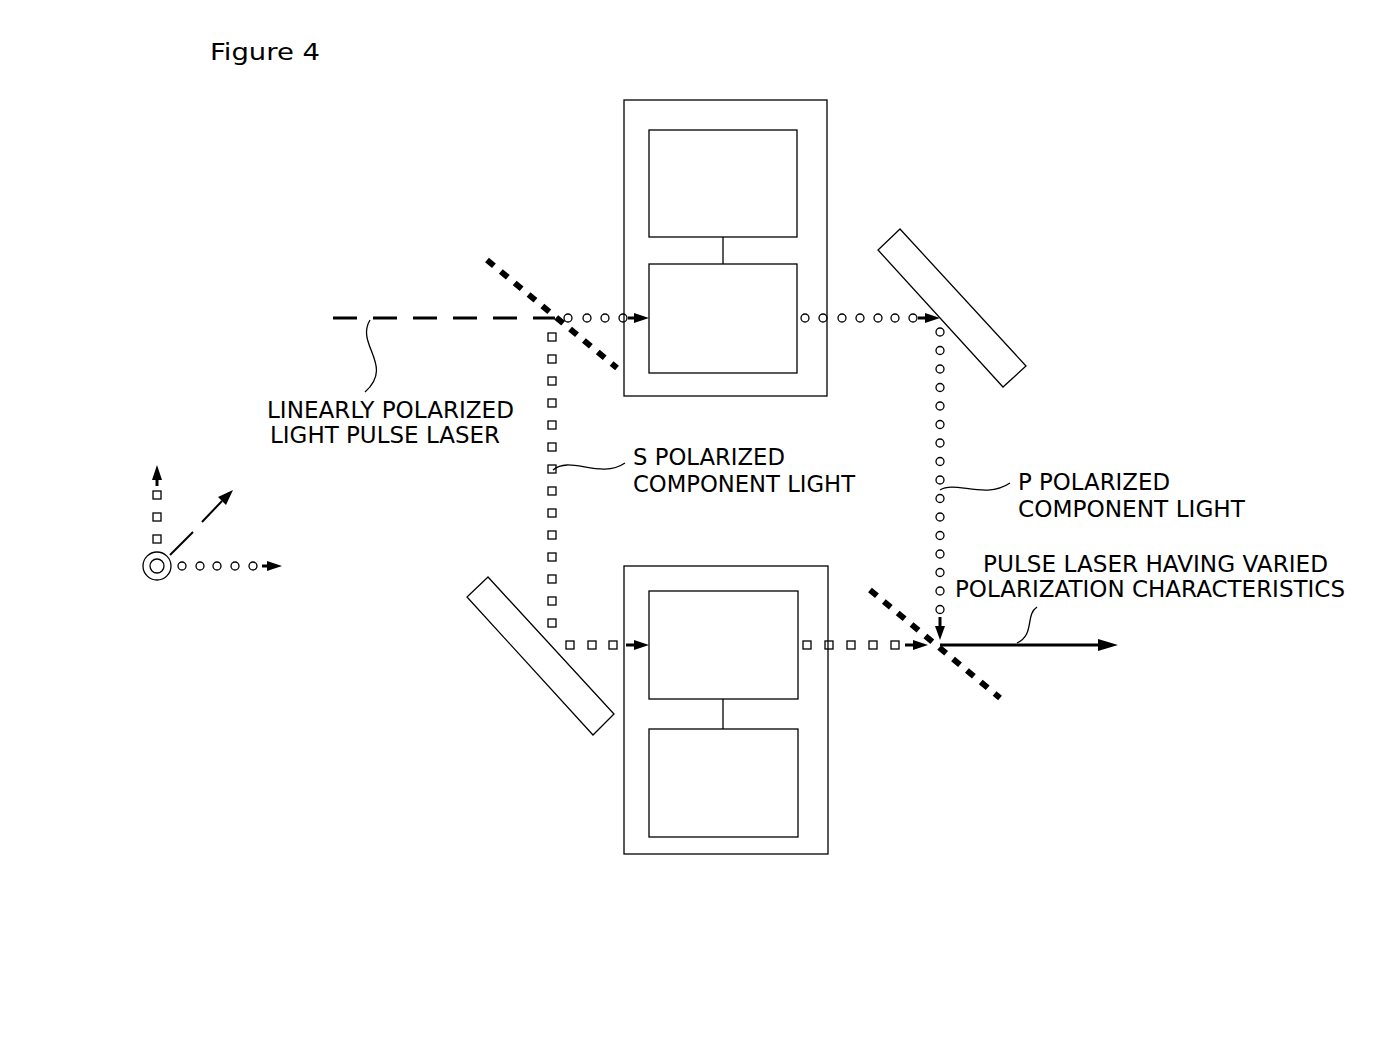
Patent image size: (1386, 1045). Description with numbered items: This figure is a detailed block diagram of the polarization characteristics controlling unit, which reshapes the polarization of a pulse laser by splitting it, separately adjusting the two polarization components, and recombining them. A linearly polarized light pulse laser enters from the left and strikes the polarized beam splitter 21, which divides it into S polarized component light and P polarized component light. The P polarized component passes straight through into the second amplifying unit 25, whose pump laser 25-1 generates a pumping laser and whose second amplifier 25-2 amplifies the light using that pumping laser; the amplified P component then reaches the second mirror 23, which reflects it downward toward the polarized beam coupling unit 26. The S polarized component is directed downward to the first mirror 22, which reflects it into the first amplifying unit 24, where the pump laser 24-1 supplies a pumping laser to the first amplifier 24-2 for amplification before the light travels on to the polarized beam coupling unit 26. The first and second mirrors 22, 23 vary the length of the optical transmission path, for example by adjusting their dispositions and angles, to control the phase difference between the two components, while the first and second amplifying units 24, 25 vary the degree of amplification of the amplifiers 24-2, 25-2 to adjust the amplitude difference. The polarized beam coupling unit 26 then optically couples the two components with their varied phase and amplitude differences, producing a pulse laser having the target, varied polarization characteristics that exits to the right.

The polarized beam splitter 21 is at (530, 292).
The first mirror 22 is at (520, 656).
The second mirror 23 is at (995, 333).
The first amplifying unit 24 is at (731, 710).
The pump laser 24-1 is at (798, 790).
The first amplifier 24-2 is at (798, 676).
The second amplifying unit 25 is at (723, 248).
The pump laser 25-1 is at (797, 162).
The second amplifier 25-2 is at (797, 352).
The polarized beam coupling unit 26 is at (990, 687).